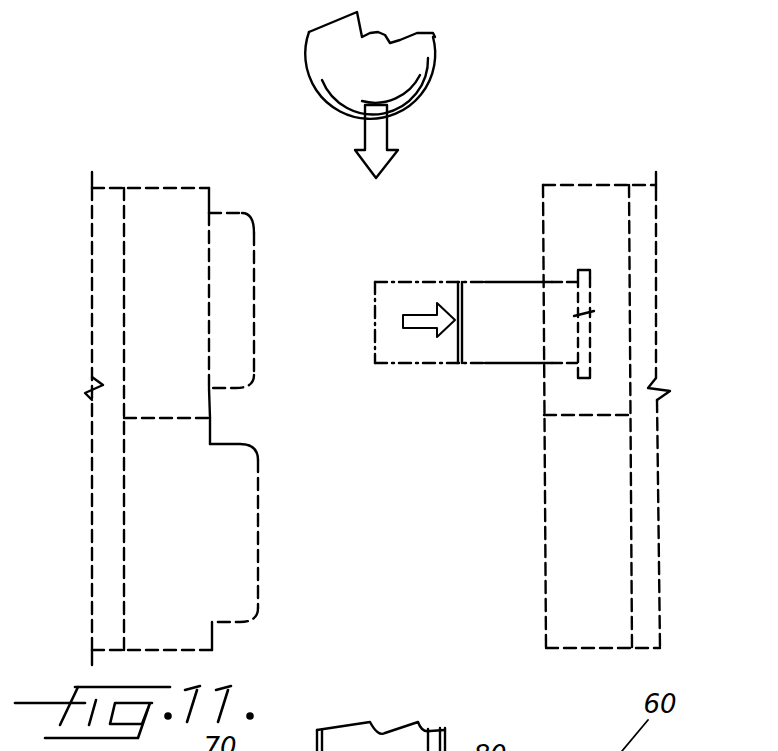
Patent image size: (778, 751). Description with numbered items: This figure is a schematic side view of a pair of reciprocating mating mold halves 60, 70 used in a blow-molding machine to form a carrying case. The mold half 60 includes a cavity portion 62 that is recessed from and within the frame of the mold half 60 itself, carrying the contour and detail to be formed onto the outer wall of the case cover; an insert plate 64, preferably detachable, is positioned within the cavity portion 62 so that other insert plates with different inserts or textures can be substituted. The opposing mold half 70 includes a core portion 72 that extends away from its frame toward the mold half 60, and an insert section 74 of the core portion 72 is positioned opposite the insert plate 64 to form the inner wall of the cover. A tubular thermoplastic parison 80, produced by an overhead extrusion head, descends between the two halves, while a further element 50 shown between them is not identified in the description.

The latch pin 50 is at (460, 297).
The second housing member 60 is at (588, 176).
The slot 62 is at (589, 262).
The tab 64 is at (580, 313).
The first housing member 70 is at (156, 186).
The flange 72 is at (243, 212).
The flange side wall 74 is at (255, 338).
The bowl 80 is at (420, 54).